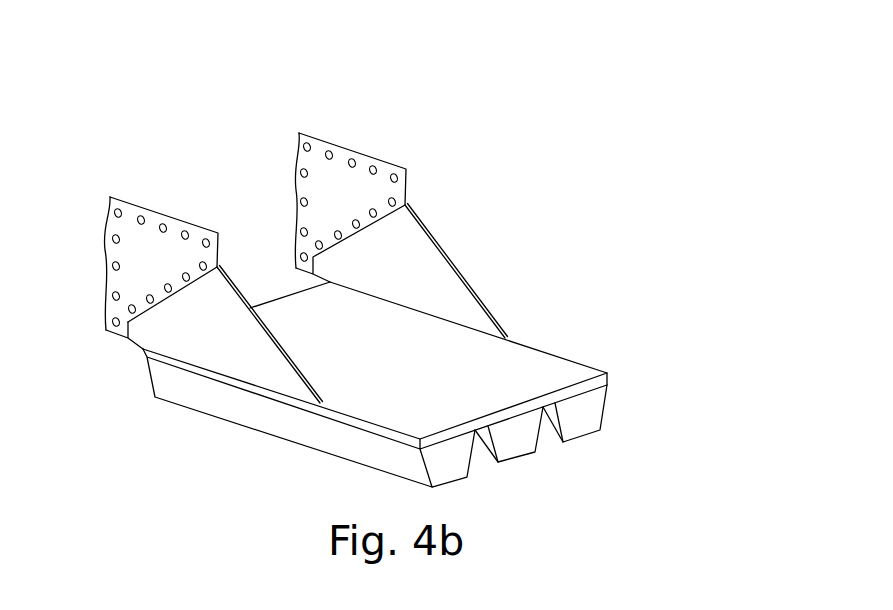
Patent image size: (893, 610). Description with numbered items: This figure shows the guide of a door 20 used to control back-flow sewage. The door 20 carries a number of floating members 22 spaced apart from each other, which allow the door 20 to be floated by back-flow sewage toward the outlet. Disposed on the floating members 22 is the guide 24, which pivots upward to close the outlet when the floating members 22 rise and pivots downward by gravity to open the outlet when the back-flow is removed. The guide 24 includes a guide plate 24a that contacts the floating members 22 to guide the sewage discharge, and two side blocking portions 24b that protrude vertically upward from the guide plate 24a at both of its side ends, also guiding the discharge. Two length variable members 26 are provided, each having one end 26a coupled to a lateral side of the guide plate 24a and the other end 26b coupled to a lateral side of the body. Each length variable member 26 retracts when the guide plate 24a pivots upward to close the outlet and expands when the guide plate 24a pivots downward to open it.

The door 20 is at (401, 293).
The floating members 22 is at (592, 408).
The guide 24 is at (467, 304).
The guide plate 24a is at (553, 367).
The side blocking portions 24b is at (428, 273).
The length variable members 26 is at (371, 267).
The one end 26a is at (114, 341).
The other end 26b is at (164, 214).